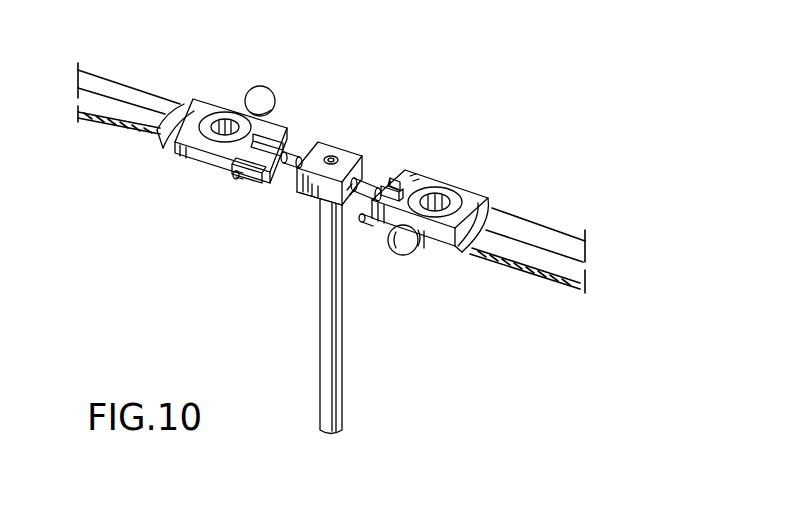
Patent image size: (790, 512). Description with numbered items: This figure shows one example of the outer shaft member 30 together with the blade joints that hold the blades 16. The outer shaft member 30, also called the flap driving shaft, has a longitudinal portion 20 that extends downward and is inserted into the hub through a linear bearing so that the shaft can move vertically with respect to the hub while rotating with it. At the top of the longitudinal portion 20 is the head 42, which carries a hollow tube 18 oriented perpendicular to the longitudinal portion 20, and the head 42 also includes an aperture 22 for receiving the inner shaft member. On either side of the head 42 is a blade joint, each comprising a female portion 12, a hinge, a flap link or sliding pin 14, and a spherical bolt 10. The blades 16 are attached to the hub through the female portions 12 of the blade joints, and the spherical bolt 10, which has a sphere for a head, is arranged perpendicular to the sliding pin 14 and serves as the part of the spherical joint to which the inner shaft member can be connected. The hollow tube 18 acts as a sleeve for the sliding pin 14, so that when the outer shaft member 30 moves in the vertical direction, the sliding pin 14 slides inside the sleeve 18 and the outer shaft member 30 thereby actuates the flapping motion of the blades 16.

The spherical bolt 10 is at (267, 84).
The female portion 12 is at (448, 197).
The sliding pin 14 is at (275, 183).
The blade 16 is at (543, 238).
The hollow tube 18 is at (298, 154).
The longitudinal portion 20 is at (333, 355).
The aperture 22 is at (341, 153).
The outer shaft member 30 is at (298, 288).
The head 42 is at (305, 183).